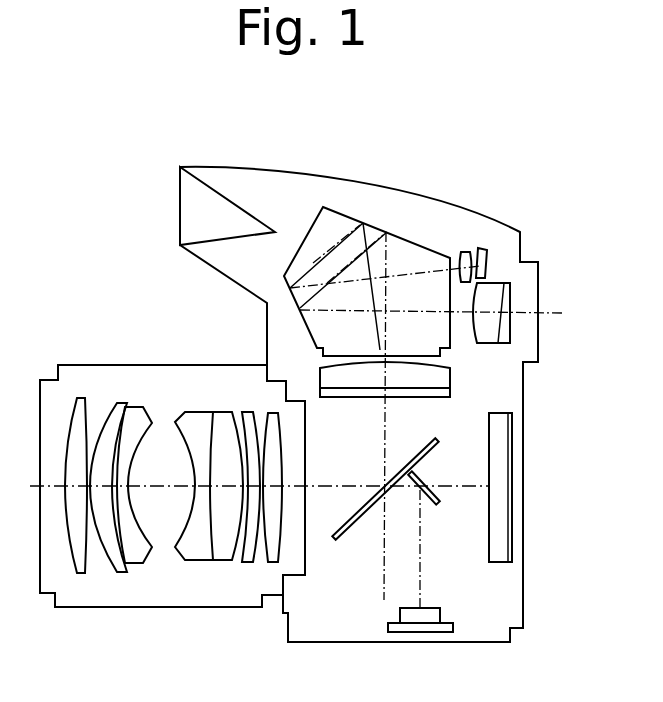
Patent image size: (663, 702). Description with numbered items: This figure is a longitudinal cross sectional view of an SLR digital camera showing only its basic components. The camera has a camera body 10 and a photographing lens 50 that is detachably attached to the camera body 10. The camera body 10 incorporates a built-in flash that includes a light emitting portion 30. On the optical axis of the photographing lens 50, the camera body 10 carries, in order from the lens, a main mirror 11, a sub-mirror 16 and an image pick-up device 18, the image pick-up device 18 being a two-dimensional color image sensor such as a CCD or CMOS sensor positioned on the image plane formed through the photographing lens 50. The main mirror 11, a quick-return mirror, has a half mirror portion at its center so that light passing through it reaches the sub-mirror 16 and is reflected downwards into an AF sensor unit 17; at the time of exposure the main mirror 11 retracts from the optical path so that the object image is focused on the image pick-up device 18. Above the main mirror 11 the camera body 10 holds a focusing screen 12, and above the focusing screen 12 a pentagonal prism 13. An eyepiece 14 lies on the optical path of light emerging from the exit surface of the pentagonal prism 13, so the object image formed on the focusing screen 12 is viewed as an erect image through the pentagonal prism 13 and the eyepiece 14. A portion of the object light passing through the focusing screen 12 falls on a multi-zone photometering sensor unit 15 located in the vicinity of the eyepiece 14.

The camera body 10 is at (523, 590).
The main mirror 11 is at (437, 440).
The focusing screen 12 is at (428, 392).
The pentagonal prism 13 is at (403, 238).
The eyepiece 14 is at (507, 290).
The multi-zone photometering sensor unit 15 is at (480, 248).
The sub-mirror 16 is at (422, 475).
The AF sensor unit 17 is at (430, 622).
The image pick-up device 18 is at (505, 503).
The light emitting portion 30 is at (218, 193).
The photographing lens 50 is at (157, 380).